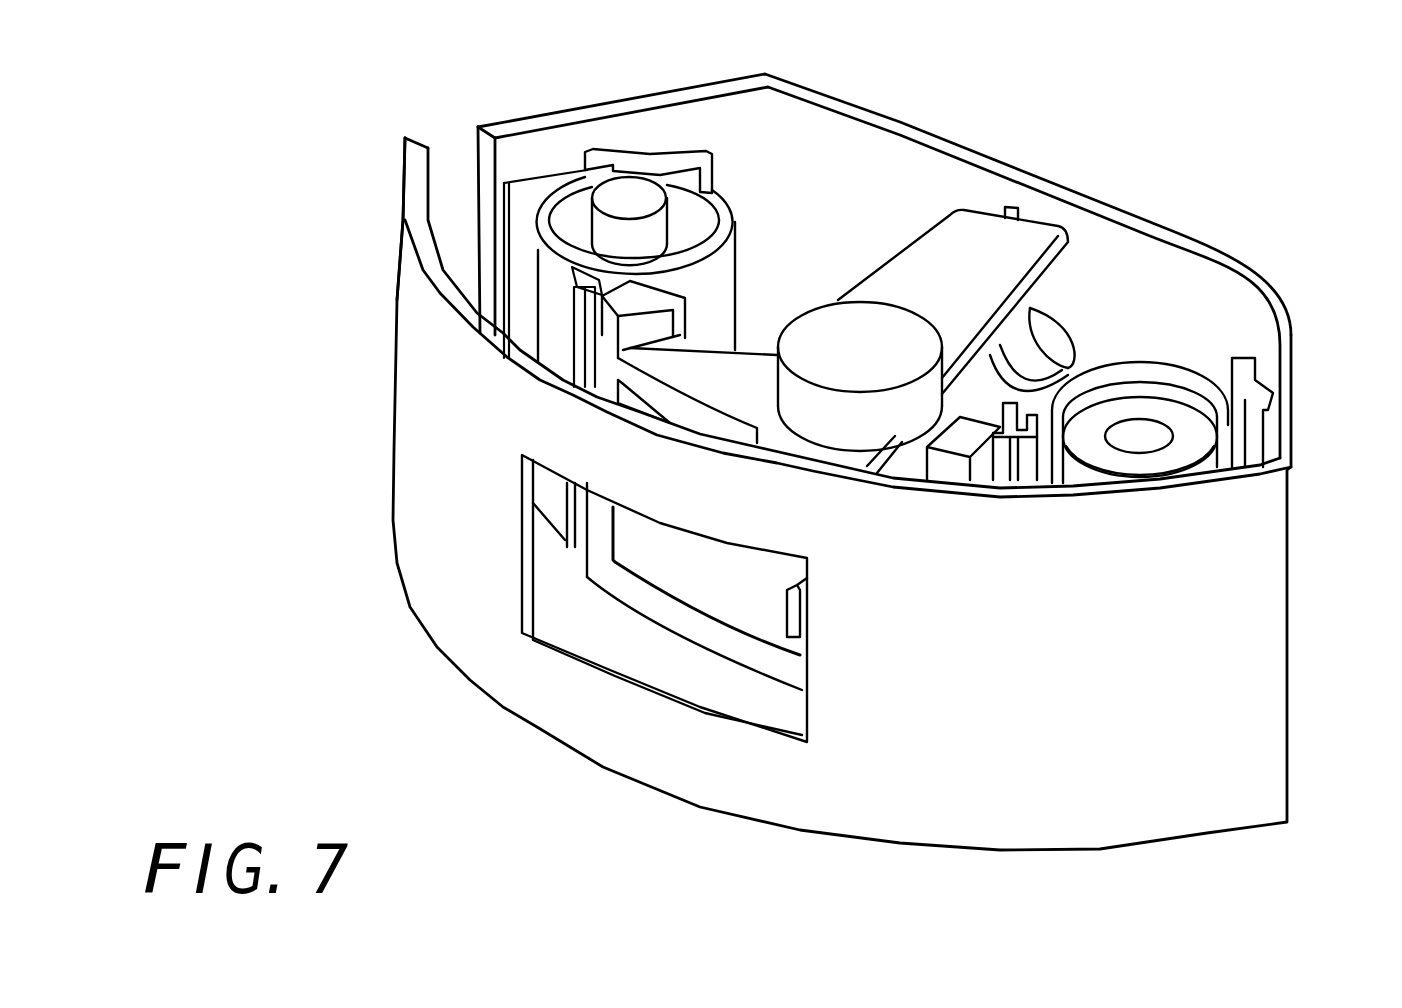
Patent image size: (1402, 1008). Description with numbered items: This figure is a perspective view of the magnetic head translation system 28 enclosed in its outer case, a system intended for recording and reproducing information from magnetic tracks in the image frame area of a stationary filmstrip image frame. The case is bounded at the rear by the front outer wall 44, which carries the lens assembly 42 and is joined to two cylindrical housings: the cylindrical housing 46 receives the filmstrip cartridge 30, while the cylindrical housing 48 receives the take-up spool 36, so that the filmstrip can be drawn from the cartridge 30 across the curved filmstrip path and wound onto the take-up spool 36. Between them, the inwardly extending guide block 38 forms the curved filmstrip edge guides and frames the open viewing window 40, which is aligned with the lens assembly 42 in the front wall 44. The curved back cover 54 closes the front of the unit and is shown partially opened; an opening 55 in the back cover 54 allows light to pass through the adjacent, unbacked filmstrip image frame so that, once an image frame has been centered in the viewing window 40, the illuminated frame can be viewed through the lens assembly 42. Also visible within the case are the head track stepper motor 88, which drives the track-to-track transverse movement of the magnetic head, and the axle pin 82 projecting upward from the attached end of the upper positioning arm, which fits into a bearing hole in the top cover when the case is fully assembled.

The magnetic head translation system 28 is at (1228, 151).
The filmstrip cartridge 30 is at (550, 303).
The take-up spool 36 is at (1165, 458).
The guide block 38 is at (735, 363).
The viewing window 40 is at (713, 603).
The lens assembly 42 is at (1050, 340).
The front outer wall 44 is at (727, 112).
The cylindrical housing 46 is at (733, 200).
The cylindrical housing 48 is at (1172, 362).
The back cover 54 is at (428, 580).
The opening 55 is at (540, 645).
The axle pin 82 is at (1018, 208).
The head track stepper motor 88 is at (845, 308).